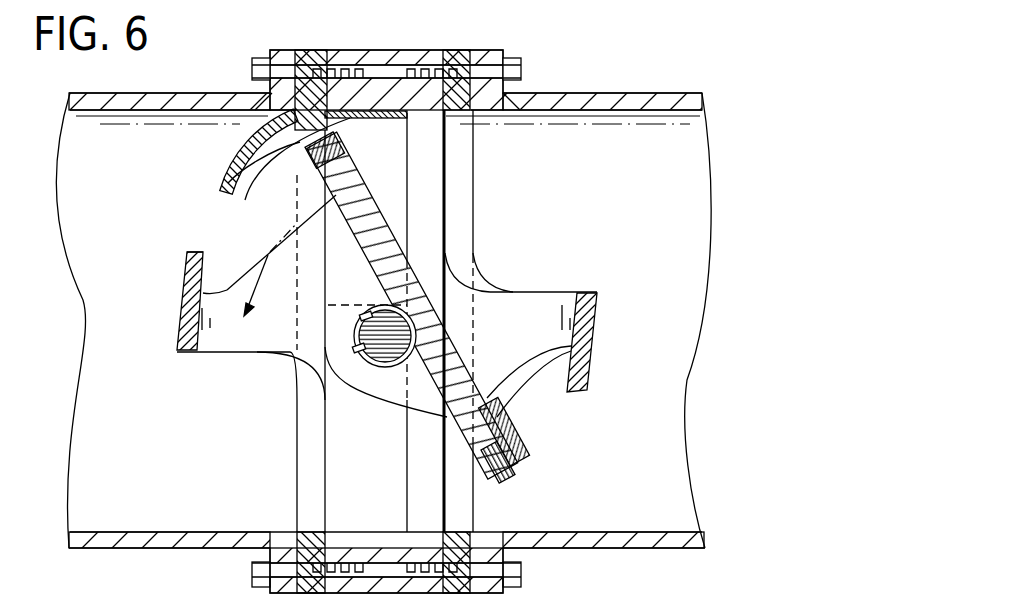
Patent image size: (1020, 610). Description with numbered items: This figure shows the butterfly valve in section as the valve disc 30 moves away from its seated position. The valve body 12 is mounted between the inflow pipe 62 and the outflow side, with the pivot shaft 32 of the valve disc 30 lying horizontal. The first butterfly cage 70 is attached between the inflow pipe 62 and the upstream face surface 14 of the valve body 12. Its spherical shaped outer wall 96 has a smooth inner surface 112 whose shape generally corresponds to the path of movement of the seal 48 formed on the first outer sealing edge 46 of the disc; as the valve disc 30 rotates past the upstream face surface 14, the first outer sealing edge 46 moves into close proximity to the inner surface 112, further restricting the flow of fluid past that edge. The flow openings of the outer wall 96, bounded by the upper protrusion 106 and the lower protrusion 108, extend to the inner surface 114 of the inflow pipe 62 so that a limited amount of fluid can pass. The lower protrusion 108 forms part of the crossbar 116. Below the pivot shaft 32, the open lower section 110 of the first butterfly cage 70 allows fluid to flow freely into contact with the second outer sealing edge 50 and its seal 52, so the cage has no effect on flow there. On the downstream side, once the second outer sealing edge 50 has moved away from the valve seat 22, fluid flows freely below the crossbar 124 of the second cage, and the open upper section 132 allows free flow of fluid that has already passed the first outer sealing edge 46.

The valve body 12 is at (414, 50).
The upstream face surface 14 is at (397, 66).
The valve seat 22 is at (415, 523).
The valve disc 30 is at (398, 272).
The pivot shaft 32 is at (387, 340).
The first outer sealing edge 46 is at (313, 218).
The seal 48 is at (346, 150).
The second outer sealing edge 50 is at (488, 478).
The seal 52 is at (512, 477).
The inflow pipe 62 is at (168, 100).
The first butterfly cage 70 is at (310, 50).
The outer wall 96 is at (180, 272).
The upper protrusion 106 is at (218, 183).
The lower protrusion 108 is at (195, 252).
The open lower section 110 is at (228, 421).
The inner surface 112 is at (289, 176).
The inner surface 114 is at (118, 112).
The crossbar 116 is at (185, 322).
The crossbar 124 is at (592, 340).
The open upper section 132 is at (496, 198).